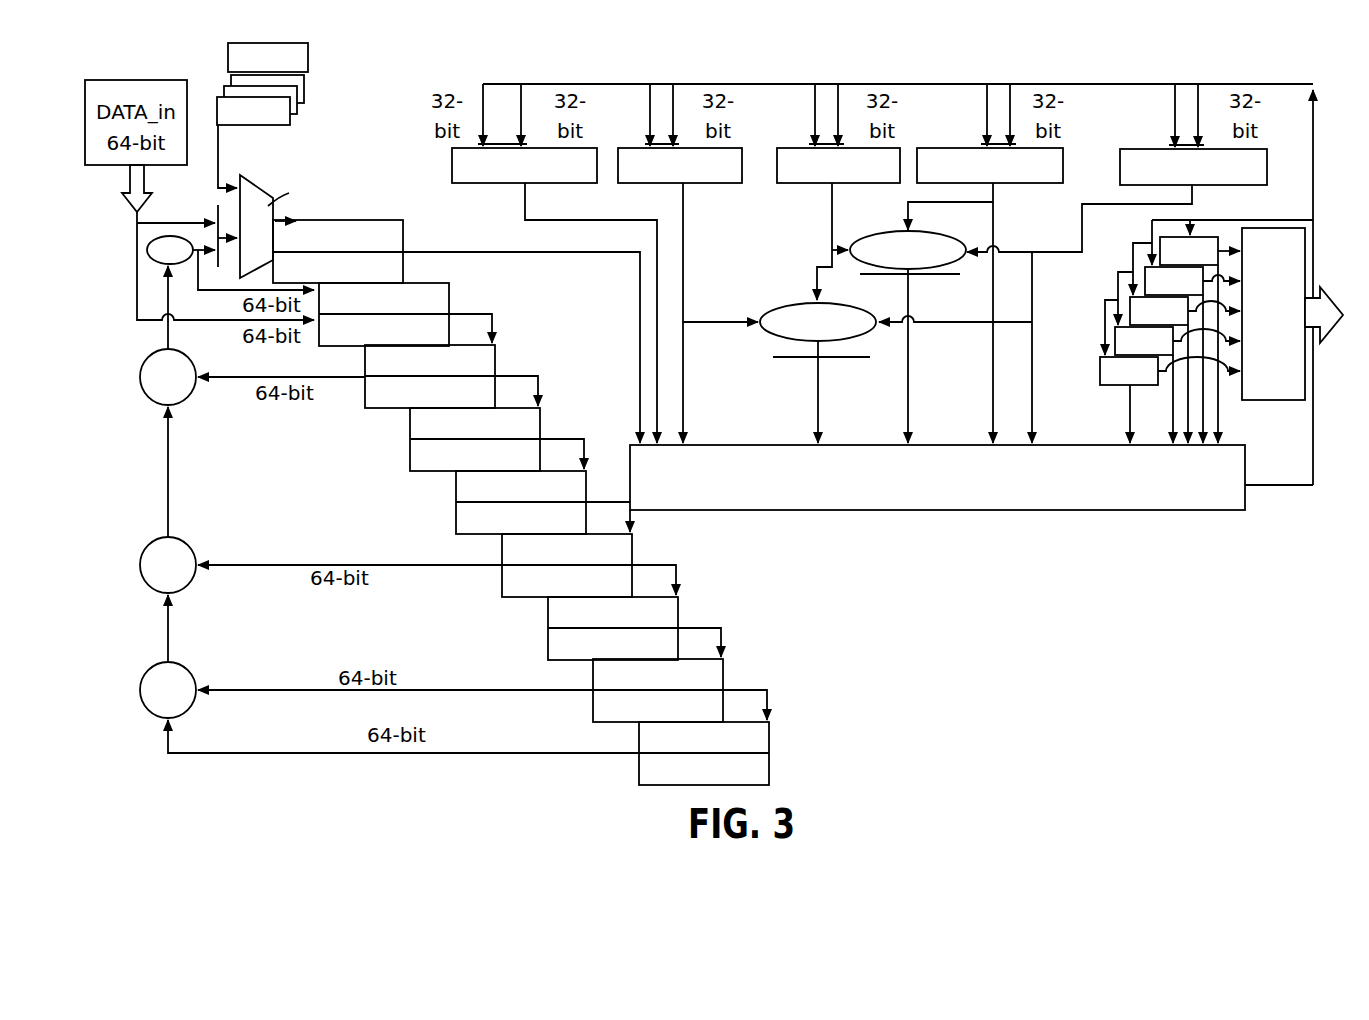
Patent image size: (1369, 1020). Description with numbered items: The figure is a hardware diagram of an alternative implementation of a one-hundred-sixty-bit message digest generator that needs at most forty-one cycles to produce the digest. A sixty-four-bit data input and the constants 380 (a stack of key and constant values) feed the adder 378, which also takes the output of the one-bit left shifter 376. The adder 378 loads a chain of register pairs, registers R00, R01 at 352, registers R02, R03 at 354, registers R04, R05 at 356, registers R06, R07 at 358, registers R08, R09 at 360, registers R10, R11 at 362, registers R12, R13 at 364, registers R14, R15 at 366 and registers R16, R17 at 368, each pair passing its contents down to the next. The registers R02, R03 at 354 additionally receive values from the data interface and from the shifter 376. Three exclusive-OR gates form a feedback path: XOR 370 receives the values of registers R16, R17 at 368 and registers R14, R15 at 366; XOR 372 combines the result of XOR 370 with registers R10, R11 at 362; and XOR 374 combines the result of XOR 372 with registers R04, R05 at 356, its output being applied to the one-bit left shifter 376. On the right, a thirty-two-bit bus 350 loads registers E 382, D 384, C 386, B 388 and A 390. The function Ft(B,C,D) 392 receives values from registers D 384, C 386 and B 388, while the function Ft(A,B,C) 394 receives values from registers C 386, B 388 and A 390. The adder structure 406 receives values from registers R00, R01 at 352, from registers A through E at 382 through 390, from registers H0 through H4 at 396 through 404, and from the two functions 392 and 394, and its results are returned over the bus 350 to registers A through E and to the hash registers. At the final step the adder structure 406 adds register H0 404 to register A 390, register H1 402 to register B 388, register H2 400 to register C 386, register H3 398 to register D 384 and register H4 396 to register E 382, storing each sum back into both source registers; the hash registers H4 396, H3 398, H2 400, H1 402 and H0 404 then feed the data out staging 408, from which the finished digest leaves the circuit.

The 32-bit data bus 350 is at (947, 84).
The registers R00, R01 352 is at (403, 255).
The registers R02, R03 354 is at (449, 310).
The registers R04, R05 356 is at (495, 373).
The registers R06, R07 358 is at (410, 440).
The registers R08, R09 360 is at (456, 503).
The registers R10, R11 362 is at (502, 566).
The registers R12, R13 364 is at (548, 628).
The registers R14, R15 366 is at (593, 697).
The registers R16, R17 368 is at (639, 765).
The XOR 370 is at (188, 710).
The XOR 372 is at (188, 585).
The XOR 374 is at (188, 398).
The 1-bit left shifter 376 is at (176, 264).
The adder 378 is at (262, 191).
The constants 380 is at (298, 108).
The register E 382 is at (521, 186).
The register D 384 is at (658, 185).
The register C 386 is at (838, 185).
The register B 388 is at (1010, 185).
The register A 390 is at (1122, 186).
The Ft(B,C,D) function 392 is at (872, 330).
The Ft(A,B,C) function 394 is at (960, 262).
The register H4 396 is at (1152, 243).
The register H3 398 is at (1133, 272).
The register H2 400 is at (1118, 302).
The register H1 402 is at (1105, 333).
The register H0 404 is at (1100, 366).
The adder structure 406 is at (1025, 510).
The data out staging 408 is at (1255, 400).